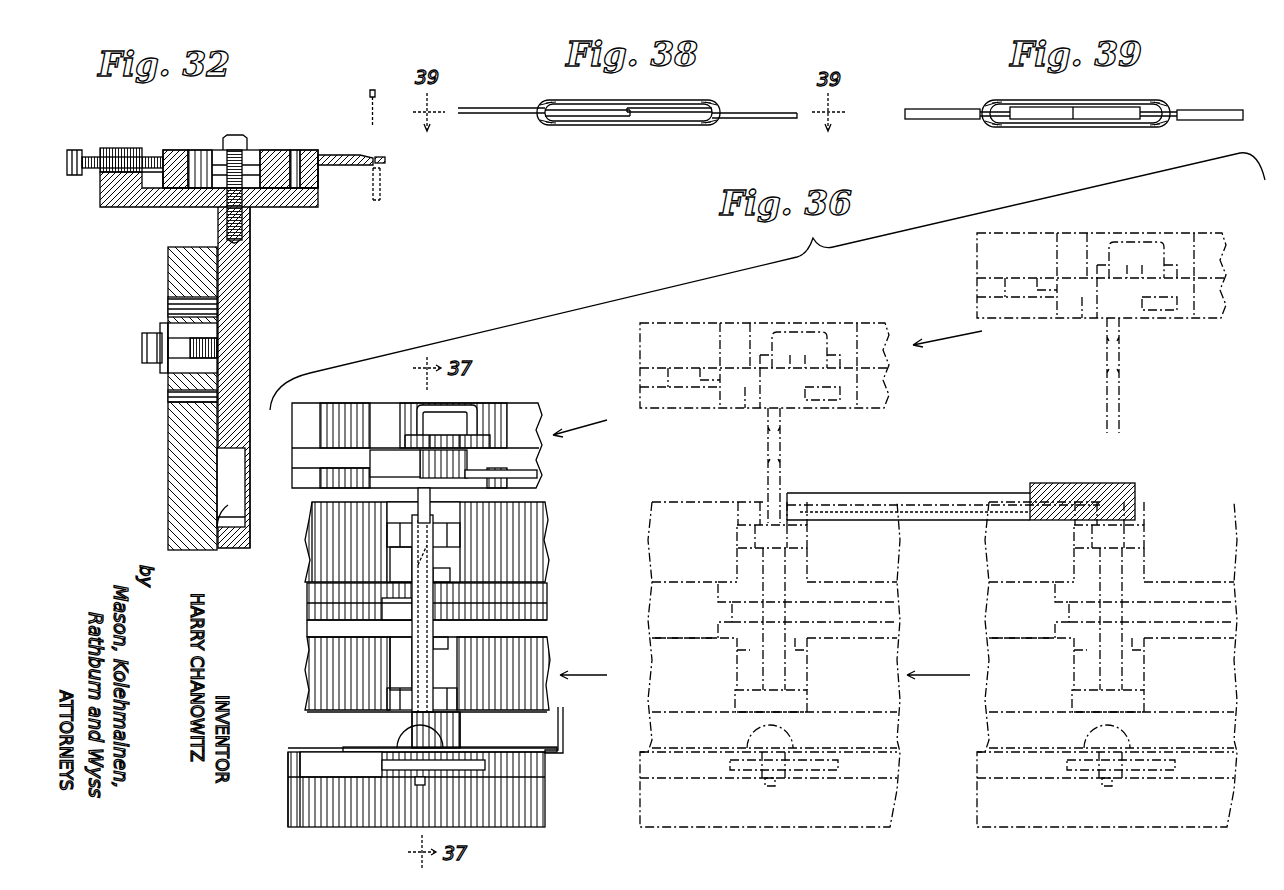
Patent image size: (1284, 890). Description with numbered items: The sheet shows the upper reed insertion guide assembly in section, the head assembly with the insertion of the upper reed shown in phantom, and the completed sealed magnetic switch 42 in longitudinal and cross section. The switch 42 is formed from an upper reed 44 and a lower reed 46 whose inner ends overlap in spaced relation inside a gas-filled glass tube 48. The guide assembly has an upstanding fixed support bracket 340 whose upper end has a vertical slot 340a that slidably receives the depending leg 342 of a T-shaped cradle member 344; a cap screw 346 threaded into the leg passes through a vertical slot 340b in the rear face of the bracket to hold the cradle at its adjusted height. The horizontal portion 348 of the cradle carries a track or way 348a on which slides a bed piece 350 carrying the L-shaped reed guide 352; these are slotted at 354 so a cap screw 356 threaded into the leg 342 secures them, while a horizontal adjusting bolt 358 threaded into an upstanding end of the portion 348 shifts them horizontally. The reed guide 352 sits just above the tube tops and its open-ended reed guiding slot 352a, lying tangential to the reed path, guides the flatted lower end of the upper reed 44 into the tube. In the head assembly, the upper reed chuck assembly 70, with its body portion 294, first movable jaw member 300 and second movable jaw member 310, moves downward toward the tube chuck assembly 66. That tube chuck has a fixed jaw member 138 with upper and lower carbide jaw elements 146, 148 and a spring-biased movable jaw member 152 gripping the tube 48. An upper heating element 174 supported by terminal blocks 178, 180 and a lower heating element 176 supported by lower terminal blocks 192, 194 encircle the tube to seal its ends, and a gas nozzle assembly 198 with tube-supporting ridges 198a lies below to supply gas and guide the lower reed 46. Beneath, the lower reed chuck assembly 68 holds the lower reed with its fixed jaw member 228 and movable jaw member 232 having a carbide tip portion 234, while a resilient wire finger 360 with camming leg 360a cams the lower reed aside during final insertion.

In FIG. 38, the sealed magnetic switch 42 is at (673, 132).
In FIG. 39, the sealed magnetic switch 42 is at (1080, 130).
In FIG. 32, the upper reed 44 is at (368, 94).
In FIG. 38, the upper reed 44 is at (742, 120).
In FIG. 39, the upper reed 44 is at (1205, 120).
In FIG. 36, the upper reed 44 is at (432, 517).
In FIG. 38, the lower reed 46 is at (476, 118).
In FIG. 39, the lower reed 46 is at (946, 120).
In FIG. 36, the lower reed 46 is at (435, 666).
In FIG. 32, the glass tube 48 is at (381, 199).
In FIG. 38, the glass tube 48 is at (600, 122).
In FIG. 39, the glass tube 48 is at (1050, 127).
In FIG. 36, the glass tube 48 is at (434, 561).
In FIG. 36, the tube chuck assembly 66 is at (553, 622).
In FIG. 36, the lower reed chuck assembly 68 is at (555, 780).
In FIG. 36, the upper reed chuck assembly 70 is at (551, 465).
In FIG. 36, the fixed jaw member 138 is at (308, 601).
In FIG. 36, the upper L-shaped jaw element 146 is at (392, 575).
In FIG. 36, the lower L-shaped jaw element 148 is at (393, 653).
In FIG. 36, the movable jaw member 152 is at (545, 596).
In FIG. 36, the upper heating element 174 is at (462, 535).
In FIG. 36, the lower heating element 176 is at (452, 703).
In FIG. 36, the terminal block 178 is at (306, 531).
In FIG. 36, the terminal block 180 is at (548, 528).
In FIG. 36, the lower terminal block 192 is at (306, 665).
In FIG. 36, the lower terminal block 194 is at (548, 660).
In FIG. 36, the gas nozzle assembly 198 is at (462, 743).
In FIG. 36, the tube-supporting ridges 198a is at (462, 719).
In FIG. 36, the fixed jaw member 228 is at (292, 805).
In FIG. 36, the movable jaw member 232 is at (545, 789).
In FIG. 36, the carbide tip portion 234 is at (396, 770).
In FIG. 36, the body portion 294 is at (374, 412).
In FIG. 36, the first movable jaw member 300 is at (312, 462).
In FIG. 36, the second movable jaw member 310 is at (541, 475).
In FIG. 32, the fixed support bracket 340 is at (168, 430).
In FIG. 32, the vertical slot 340a is at (226, 522).
In FIG. 32, the vertical slot 340b is at (168, 302).
In FIG. 32, the depending leg 342 is at (250, 300).
In FIG. 32, the T-shaped cradle member 344 is at (252, 256).
In FIG. 32, the cap screw 346 is at (142, 350).
In FIG. 32, the horizontal portion 348 is at (292, 208).
In FIG. 32, the track or way 348a is at (152, 183).
In FIG. 32, the bed piece 350 is at (320, 170).
In FIG. 32, the L-shaped reed guide 352 is at (324, 154).
In FIG. 36, the L-shaped reed guide 352 is at (1080, 483).
In FIG. 32, the reed guiding slot 352a is at (385, 155).
In FIG. 36, the reed guiding slot 352a is at (935, 493).
In FIG. 32, the slot 354 is at (255, 150).
In FIG. 32, the cap screw 356 is at (236, 135).
In FIG. 32, the horizontal adjusting bolt 358 is at (77, 150).
In FIG. 36, the resilient wire finger 360 is at (563, 719).
In FIG. 36, the camming leg 360a is at (373, 764).